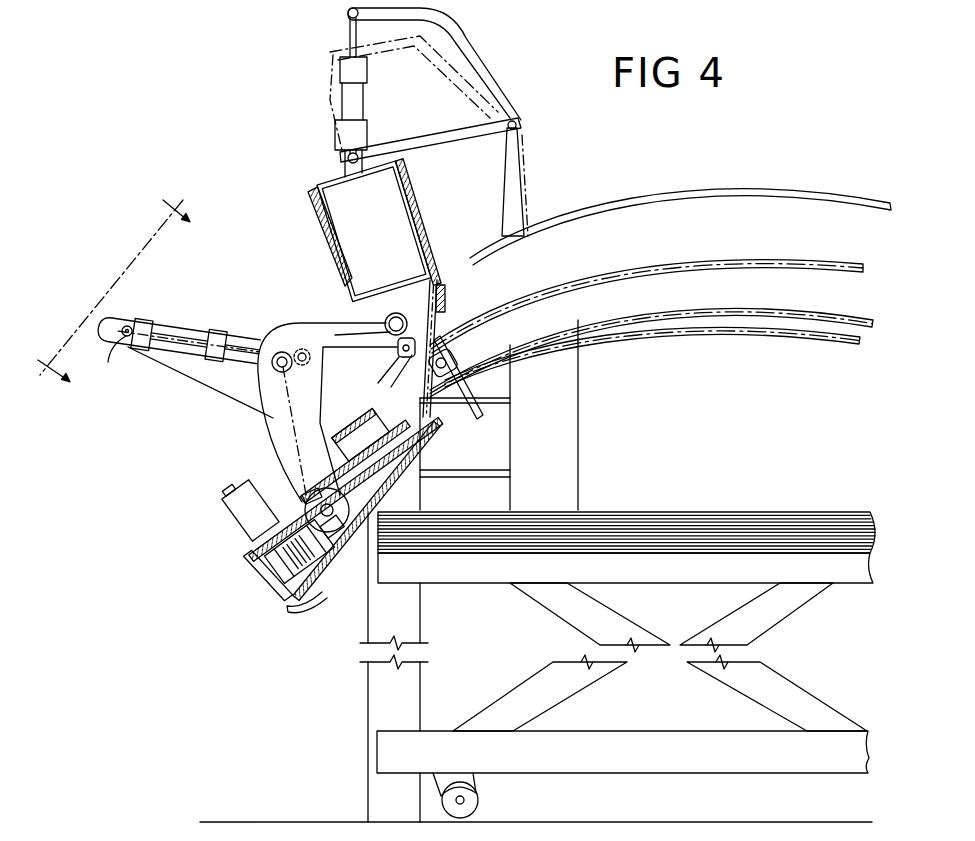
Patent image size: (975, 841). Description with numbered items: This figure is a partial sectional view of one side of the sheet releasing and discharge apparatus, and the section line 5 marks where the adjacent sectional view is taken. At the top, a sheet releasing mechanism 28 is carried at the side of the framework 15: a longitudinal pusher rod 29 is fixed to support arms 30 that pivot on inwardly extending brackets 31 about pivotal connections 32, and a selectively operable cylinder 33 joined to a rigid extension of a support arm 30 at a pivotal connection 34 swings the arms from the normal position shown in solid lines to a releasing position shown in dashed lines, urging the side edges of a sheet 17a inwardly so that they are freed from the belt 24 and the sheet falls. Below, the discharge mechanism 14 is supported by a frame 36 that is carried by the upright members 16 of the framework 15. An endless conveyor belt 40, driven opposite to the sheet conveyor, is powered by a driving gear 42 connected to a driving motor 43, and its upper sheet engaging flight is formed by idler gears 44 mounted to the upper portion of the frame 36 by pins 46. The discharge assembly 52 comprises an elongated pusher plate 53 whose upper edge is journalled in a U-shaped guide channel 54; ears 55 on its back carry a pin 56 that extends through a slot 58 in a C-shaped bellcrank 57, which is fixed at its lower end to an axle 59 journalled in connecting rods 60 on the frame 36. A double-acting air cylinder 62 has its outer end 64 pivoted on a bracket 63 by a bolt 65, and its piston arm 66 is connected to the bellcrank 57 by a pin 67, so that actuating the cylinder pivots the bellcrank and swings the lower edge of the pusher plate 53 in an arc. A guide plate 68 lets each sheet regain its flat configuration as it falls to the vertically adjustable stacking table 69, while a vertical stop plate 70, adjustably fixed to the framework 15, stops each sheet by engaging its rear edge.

The section line 5- 5 is at (114, 293).
The discharge mechanism 14 is at (305, 390).
The framework 15 is at (359, 697).
The upright members 16 is at (398, 607).
The sheet 17a is at (733, 305).
The belt 24 is at (417, 190).
The sheet releasing mechanism 28 is at (439, 64).
The pusher rod 29 is at (520, 233).
The support arms 30 is at (460, 44).
The brackets 31 is at (441, 143).
The pivotal connections 32 is at (520, 122).
The cylinder 33 is at (363, 95).
The pivotal connection 34 is at (343, 160).
The frame 36 is at (433, 453).
The endless conveyor belt 40 is at (267, 572).
The driving gear 42 is at (248, 548).
The driving motor 43 is at (242, 515).
The idler gears 44 is at (380, 398).
The pins 46 is at (472, 403).
The discharge assembly 52 is at (282, 318).
The pusher plate 53 is at (452, 327).
The U-shaped guide channel 54 is at (453, 297).
The ears 55 is at (458, 341).
The pin 56 is at (390, 377).
The bellcrank 57 is at (327, 325).
The slot 58 is at (407, 312).
The axle 59 is at (307, 490).
The connecting rods 60 is at (384, 494).
The air cylinder 62 is at (176, 293).
The bracket 63 is at (198, 368).
The outer end 64 is at (128, 363).
The bolt 65 is at (120, 343).
The piston arm 66 is at (243, 348).
The pin 67 is at (275, 362).
The guide plate 68 is at (328, 607).
The stacking table 69 is at (653, 580).
The stop plate 70 is at (567, 408).